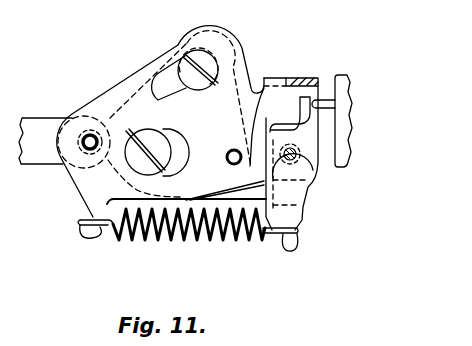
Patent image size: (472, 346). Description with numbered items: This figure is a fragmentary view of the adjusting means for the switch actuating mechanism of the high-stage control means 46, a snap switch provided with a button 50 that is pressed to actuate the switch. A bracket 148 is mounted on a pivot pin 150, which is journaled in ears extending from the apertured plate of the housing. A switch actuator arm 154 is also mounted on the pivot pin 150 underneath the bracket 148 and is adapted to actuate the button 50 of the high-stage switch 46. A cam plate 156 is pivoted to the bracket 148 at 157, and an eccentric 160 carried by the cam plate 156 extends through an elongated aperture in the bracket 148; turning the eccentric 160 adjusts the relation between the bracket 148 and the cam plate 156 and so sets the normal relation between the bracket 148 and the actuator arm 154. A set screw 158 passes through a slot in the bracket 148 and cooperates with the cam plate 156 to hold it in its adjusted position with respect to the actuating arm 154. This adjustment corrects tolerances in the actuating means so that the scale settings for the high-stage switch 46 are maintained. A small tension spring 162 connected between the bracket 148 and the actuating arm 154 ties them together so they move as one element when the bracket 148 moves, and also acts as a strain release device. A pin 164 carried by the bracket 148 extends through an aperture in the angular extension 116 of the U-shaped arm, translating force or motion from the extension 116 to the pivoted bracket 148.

The high-stage control means 46 is at (344, 90).
The button 50 is at (325, 100).
The angular extension 116 is at (50, 150).
The bracket 148 is at (93, 196).
The pivot pin 150 is at (297, 158).
The switch actuator arm 154 is at (297, 195).
The cam plate 156 is at (238, 188).
The pivot of cam plate 157 is at (234, 151).
The set screw 158 is at (205, 56).
The eccentric 160 is at (153, 143).
The tension spring 162 is at (167, 242).
The pin 164 is at (88, 137).